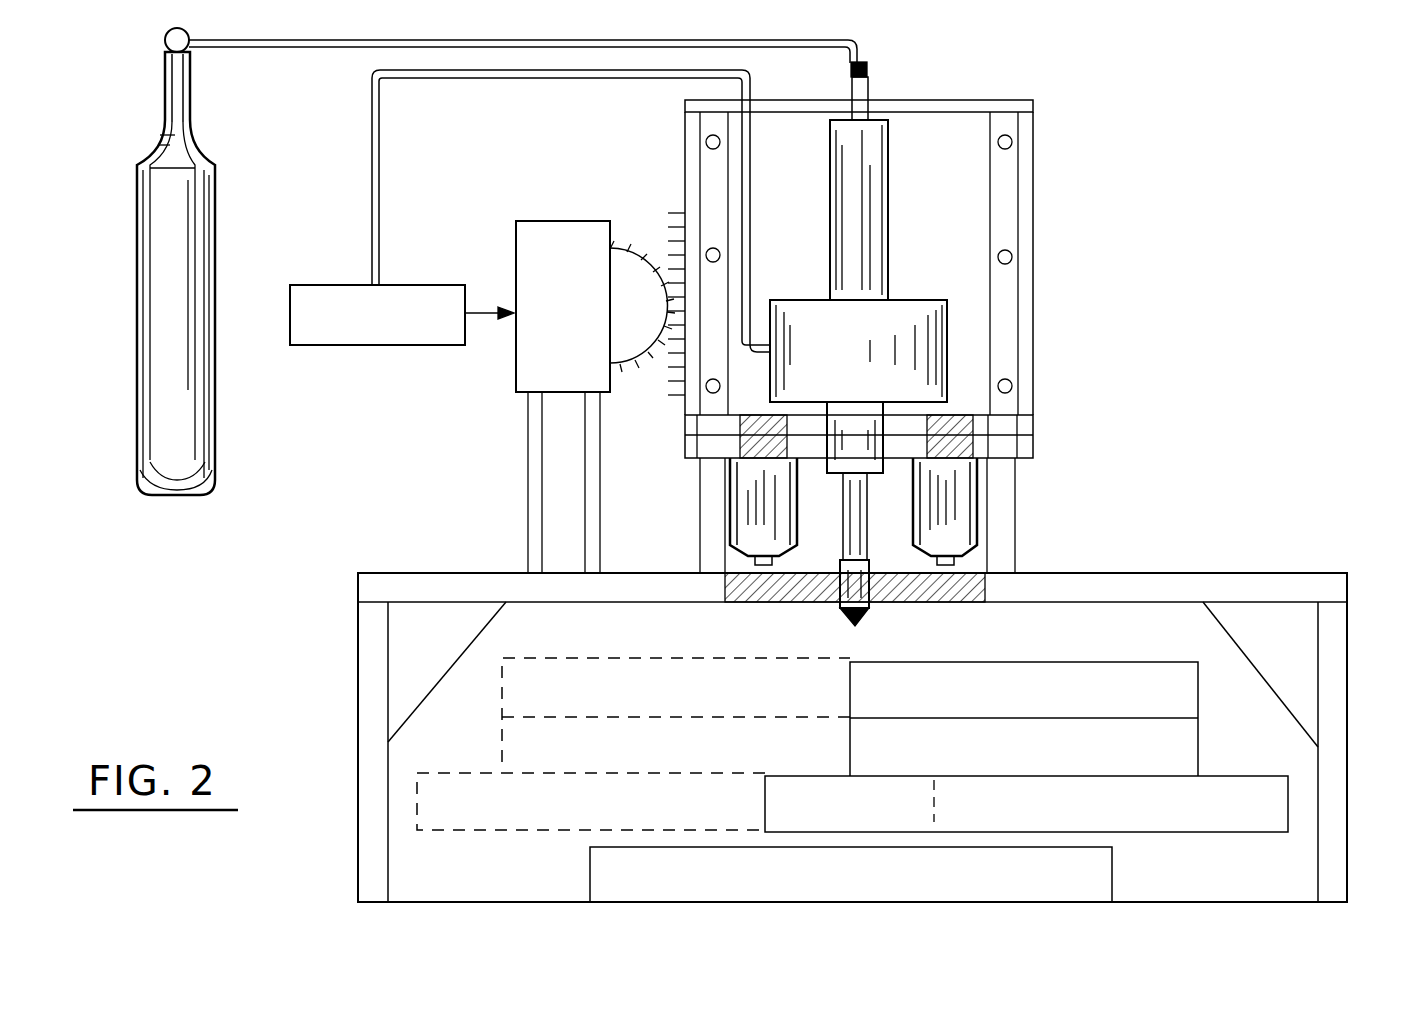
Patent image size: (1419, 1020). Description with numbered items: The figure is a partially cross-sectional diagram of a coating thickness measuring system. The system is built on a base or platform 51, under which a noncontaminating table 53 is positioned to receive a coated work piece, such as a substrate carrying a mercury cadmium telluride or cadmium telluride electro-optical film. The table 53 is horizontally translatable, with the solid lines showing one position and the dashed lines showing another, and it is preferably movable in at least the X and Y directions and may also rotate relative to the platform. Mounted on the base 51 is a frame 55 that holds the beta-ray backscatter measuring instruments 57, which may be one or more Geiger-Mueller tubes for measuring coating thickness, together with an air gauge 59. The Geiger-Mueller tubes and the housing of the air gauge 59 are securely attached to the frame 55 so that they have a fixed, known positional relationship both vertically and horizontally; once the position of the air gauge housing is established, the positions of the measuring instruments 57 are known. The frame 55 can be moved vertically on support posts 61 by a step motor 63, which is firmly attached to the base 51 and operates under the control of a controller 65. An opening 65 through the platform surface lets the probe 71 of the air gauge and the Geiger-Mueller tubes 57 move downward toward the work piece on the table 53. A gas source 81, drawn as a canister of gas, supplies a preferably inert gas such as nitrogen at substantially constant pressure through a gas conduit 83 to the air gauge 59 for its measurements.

The base 51 is at (1332, 791).
The noncontaminating table 53 is at (1038, 652).
The frame 55 is at (1035, 175).
The beta-ray backscatter measuring instruments 57 is at (768, 508).
The air gauge 59 is at (820, 330).
The support posts 61 is at (1000, 548).
The step motor 63 is at (595, 397).
The controller 65 is at (331, 355).
The probe 71 is at (870, 563).
The gas source 81 is at (187, 425).
The gas conduit 83 is at (325, 55).